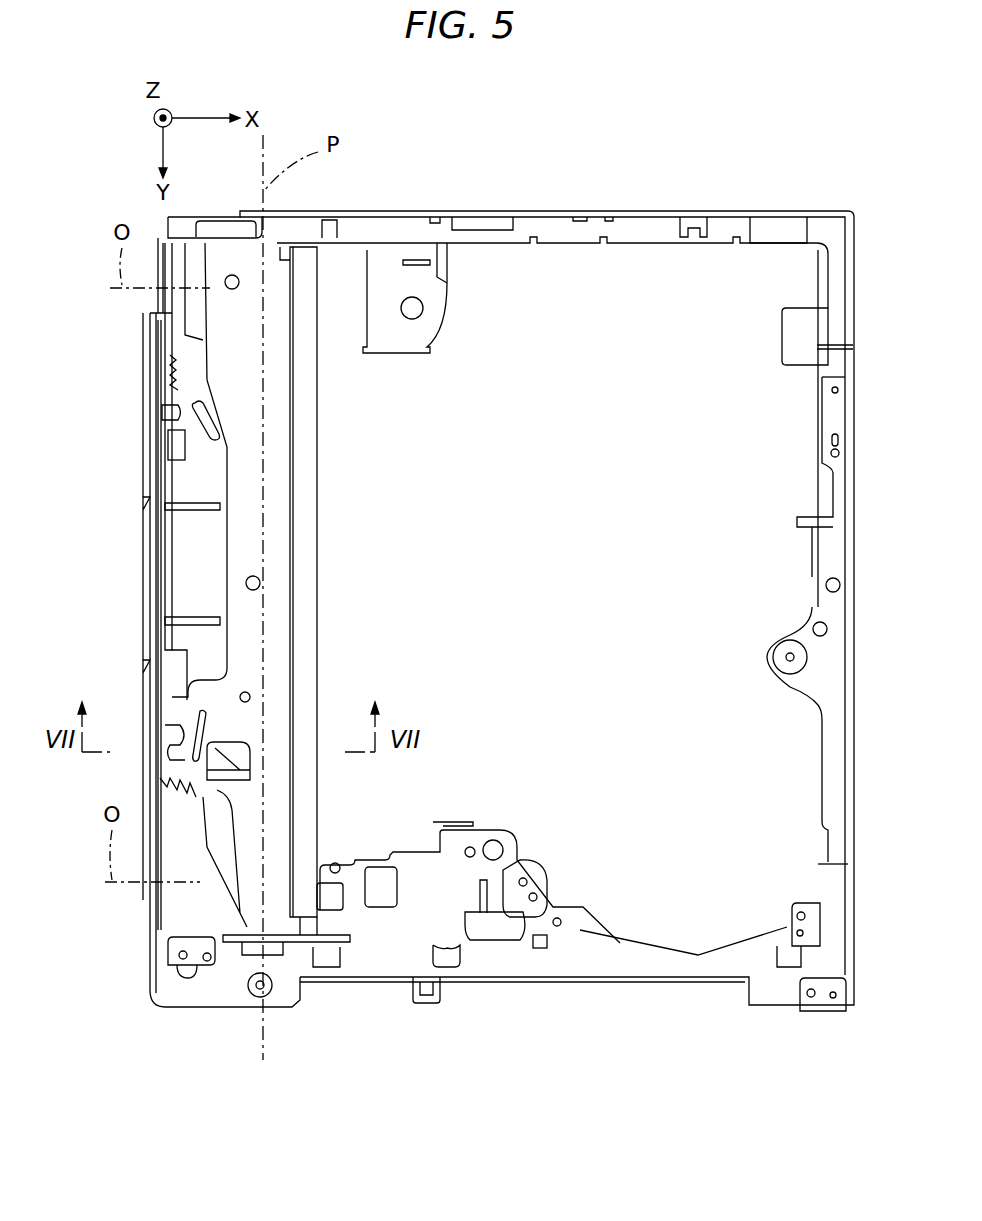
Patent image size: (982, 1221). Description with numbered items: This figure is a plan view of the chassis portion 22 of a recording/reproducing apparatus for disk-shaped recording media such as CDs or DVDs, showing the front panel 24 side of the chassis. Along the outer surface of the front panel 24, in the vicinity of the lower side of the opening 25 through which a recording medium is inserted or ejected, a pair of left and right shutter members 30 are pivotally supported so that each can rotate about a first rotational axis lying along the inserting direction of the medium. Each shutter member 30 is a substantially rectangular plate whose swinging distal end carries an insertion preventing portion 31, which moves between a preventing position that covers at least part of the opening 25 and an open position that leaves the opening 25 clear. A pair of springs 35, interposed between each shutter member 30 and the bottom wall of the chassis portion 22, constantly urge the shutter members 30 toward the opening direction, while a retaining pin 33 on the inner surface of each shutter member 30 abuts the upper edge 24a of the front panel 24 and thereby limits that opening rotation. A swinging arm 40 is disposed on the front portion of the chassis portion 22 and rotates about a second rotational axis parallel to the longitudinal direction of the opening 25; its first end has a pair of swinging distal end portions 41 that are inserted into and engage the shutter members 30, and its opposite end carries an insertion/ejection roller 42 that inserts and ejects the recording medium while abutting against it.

The chassis portion 22 is at (577, 208).
The front panel 24 is at (150, 918).
The upper edge of the front panel 24a is at (160, 447).
The opening 25 is at (188, 582).
The shutter member 30 is at (138, 464).
The insertion preventing portion 31 is at (150, 497).
The retaining pin 33 is at (203, 453).
The spring 35 is at (173, 370).
The swinging arm 40 is at (238, 540).
The swinging distal end portion 41 is at (165, 412).
The insertion/ejection roller 42 is at (326, 506).